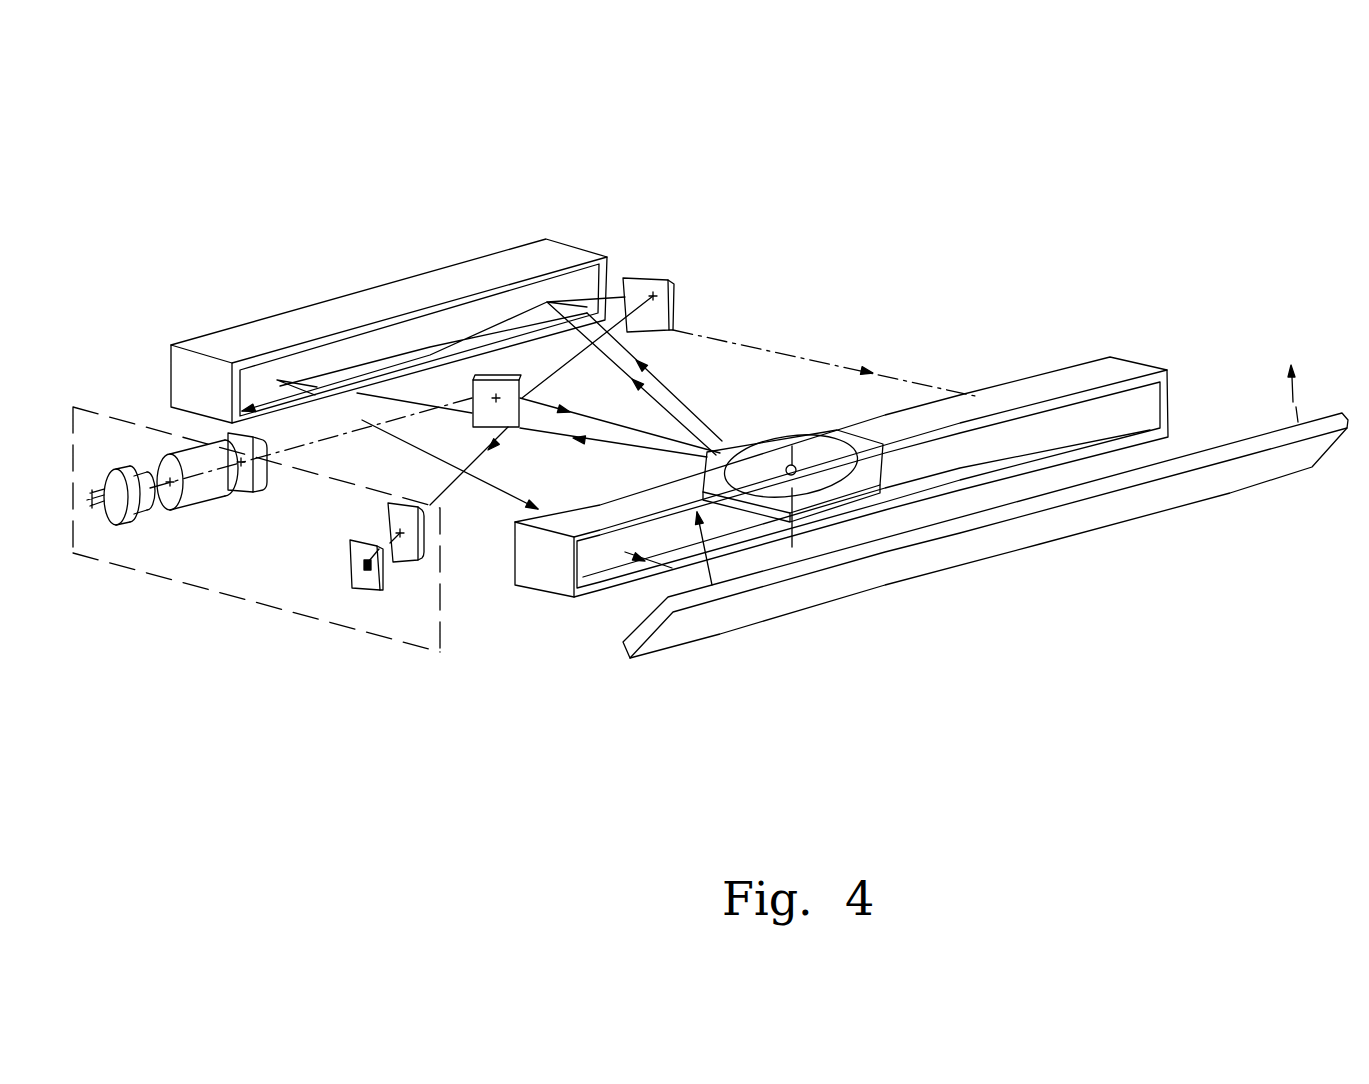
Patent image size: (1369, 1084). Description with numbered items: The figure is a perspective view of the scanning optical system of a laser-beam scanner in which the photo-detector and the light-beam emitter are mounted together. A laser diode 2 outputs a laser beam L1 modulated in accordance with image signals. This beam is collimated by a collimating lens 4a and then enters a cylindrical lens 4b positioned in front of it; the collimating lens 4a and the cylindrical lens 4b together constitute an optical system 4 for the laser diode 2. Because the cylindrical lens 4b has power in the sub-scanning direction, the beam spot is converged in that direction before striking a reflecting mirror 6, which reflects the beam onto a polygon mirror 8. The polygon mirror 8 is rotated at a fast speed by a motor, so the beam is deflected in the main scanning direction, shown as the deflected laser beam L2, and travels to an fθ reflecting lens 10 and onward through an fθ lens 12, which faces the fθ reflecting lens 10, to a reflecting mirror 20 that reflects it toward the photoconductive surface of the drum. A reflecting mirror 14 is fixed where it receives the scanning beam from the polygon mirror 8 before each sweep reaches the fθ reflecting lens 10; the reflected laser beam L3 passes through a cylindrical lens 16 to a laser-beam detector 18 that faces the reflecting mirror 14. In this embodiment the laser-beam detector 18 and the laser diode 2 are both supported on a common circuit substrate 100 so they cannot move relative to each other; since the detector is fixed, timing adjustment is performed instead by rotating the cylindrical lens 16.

The laser diode 2 is at (133, 477).
The optical system 4 is at (227, 198).
The collimating lens 4a is at (197, 455).
The cylindrical lens 4b is at (253, 433).
The reflecting mirror 6 is at (501, 377).
The polygon mirror 8 is at (797, 436).
The fθ reflecting lens 10 is at (495, 318).
The fθ lens 12 is at (1090, 378).
The reflecting mirror 14 is at (673, 293).
The cylindrical lens 16 is at (424, 553).
The laser-beam detector 18 is at (368, 582).
The reflecting mirror 20 is at (1188, 490).
The common circuit substrate 100 is at (445, 630).
The laser beam L1 is at (342, 432).
The second light beam L2 is at (832, 363).
The laser beam L3 is at (453, 480).